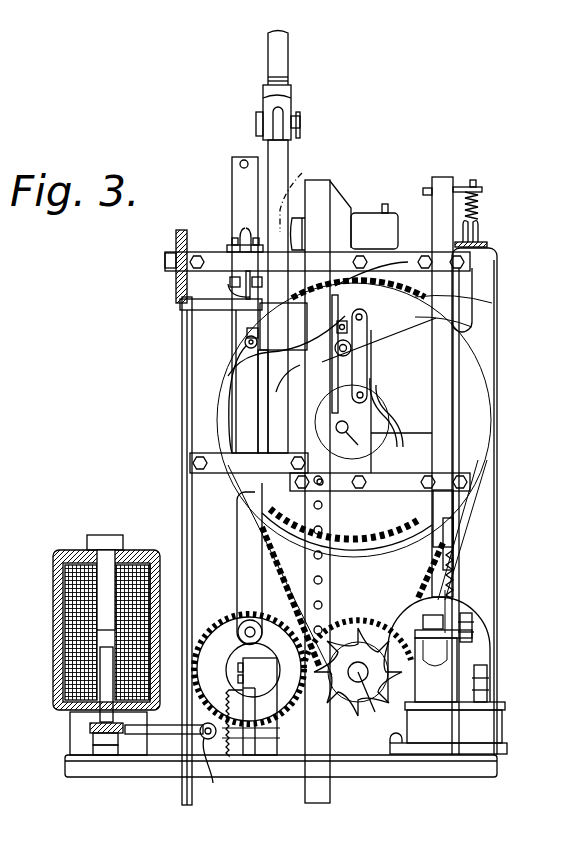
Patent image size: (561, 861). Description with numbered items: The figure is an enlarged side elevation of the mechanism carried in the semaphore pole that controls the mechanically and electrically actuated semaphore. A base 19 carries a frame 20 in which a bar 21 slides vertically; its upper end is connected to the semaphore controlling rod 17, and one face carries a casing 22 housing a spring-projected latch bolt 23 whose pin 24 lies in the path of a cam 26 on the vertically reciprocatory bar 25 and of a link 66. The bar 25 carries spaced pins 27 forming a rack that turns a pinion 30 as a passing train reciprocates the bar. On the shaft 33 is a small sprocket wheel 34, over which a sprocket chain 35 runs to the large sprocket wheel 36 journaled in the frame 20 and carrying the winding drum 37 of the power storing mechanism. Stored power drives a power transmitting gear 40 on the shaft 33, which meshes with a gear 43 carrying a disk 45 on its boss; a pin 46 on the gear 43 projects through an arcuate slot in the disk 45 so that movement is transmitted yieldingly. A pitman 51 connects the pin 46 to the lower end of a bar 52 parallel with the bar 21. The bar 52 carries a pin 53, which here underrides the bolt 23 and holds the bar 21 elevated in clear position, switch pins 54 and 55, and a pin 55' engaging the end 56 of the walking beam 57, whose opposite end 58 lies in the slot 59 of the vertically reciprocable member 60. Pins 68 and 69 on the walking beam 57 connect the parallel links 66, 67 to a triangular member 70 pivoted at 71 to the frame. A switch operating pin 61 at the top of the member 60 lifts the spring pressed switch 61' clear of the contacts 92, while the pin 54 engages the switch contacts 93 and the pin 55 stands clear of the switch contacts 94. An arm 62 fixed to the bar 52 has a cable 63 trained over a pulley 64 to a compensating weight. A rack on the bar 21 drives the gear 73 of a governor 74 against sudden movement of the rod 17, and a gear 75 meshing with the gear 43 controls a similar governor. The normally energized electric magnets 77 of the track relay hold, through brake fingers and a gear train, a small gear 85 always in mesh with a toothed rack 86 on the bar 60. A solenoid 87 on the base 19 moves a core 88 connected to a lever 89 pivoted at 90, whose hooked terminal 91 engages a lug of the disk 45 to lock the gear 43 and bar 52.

The semaphore controlling rod 17 is at (290, 42).
The base 19 is at (494, 769).
The frame 20 is at (188, 447).
The bar 21 is at (283, 150).
The casing 22 is at (283, 326).
The latch bolt 23 is at (250, 330).
The pin 24 is at (388, 291).
The vertically reciprocatory bar 25 is at (322, 192).
The cam 26 is at (377, 257).
The spaced pins 27 is at (340, 612).
The pinion 30 is at (360, 637).
The shaft 33 is at (395, 700).
The small sprocket wheel 34 is at (372, 727).
The sprocket chain 35 is at (433, 572).
The large sprocket wheel 36 is at (432, 527).
The winding drum 37 is at (330, 468).
The power transmitting gear 40 is at (312, 655).
The gear 43 is at (214, 624).
The disk 45 is at (209, 629).
The pin 46 is at (249, 620).
The pitman 51 is at (224, 541).
The vertically reciprocable bar 52 is at (236, 174).
The pin 53 is at (247, 344).
The switch pin 54 is at (253, 316).
The switch pin 55 is at (228, 143).
The pin 55' is at (227, 250).
The end of walking beam 56 is at (228, 376).
The walking beam 57 is at (379, 340).
The end of walking beam 58 is at (415, 327).
The slot 59 is at (472, 298).
The vertically reciprocable member 60 is at (447, 406).
The switch operating pin 61 is at (470, 170).
The spring pressed switch 61' is at (498, 172).
The arm 62 is at (178, 306).
The cable 63 is at (232, 292).
The pulley 64 is at (176, 236).
The link 66 is at (366, 377).
The link 67 is at (372, 386).
The pin 68 is at (364, 215).
The pin 69 is at (363, 317).
The triangular shaped member 70 is at (366, 405).
The pivot 71 is at (348, 432).
The gear 73 is at (302, 199).
The governor 74 is at (367, 220).
The gear 75 is at (257, 717).
The electric magnets 77 is at (450, 665).
The small gear 85 is at (433, 662).
The toothed rack 86 is at (452, 572).
The solenoid 87 is at (54, 622).
The core 88 is at (107, 690).
The lever 89 is at (160, 728).
The pivot 90 is at (219, 774).
The hooked terminal 91 is at (276, 743).
The contacts 92 is at (482, 231).
The switch contacts 93 is at (228, 282).
The switch contacts 94 is at (239, 233).